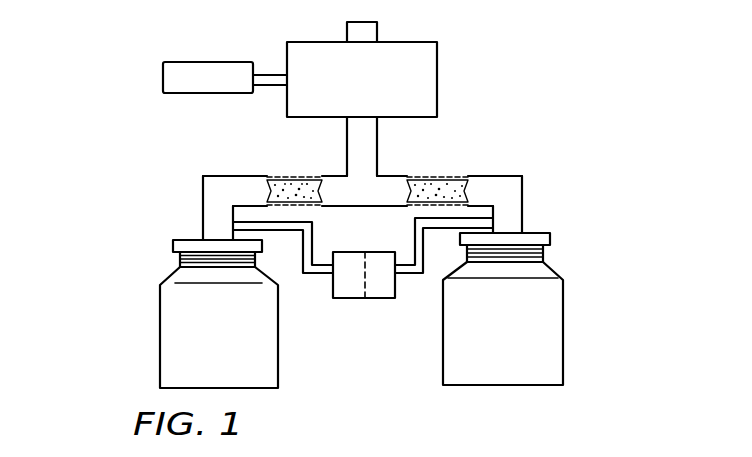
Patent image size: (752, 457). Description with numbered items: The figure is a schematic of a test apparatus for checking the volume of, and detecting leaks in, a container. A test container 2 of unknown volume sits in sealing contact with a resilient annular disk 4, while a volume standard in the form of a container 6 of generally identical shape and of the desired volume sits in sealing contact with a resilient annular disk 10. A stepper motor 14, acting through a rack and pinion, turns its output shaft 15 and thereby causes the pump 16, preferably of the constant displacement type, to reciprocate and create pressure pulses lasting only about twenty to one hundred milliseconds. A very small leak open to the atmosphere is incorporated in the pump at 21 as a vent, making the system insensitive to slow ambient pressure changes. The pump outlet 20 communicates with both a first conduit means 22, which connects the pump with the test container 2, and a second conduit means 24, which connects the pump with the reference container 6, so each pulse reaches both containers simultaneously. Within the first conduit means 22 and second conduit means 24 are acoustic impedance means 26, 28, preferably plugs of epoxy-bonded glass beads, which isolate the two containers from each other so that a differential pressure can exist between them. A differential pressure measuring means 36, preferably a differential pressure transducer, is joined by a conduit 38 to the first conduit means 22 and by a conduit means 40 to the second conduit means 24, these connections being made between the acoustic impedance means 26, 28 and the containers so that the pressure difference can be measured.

The test container 2 is at (566, 313).
The resilient annular disk 4 is at (553, 231).
The container 6 is at (160, 322).
The resilient annular disk 10 is at (178, 238).
The stepper motor 14 is at (210, 72).
The output shaft 15 is at (262, 76).
The pump 16 is at (423, 47).
The pump outlet 20 is at (367, 140).
The leak 21 is at (380, 24).
The first conduit means 22 is at (517, 196).
The second conduit means 24 is at (215, 185).
The acoustic impedance means 26 is at (445, 180).
The acoustic impedance means 28 is at (287, 188).
The differential pressure measuring means 36 is at (353, 298).
The conduit 38 is at (418, 273).
The conduit means 40 is at (312, 242).